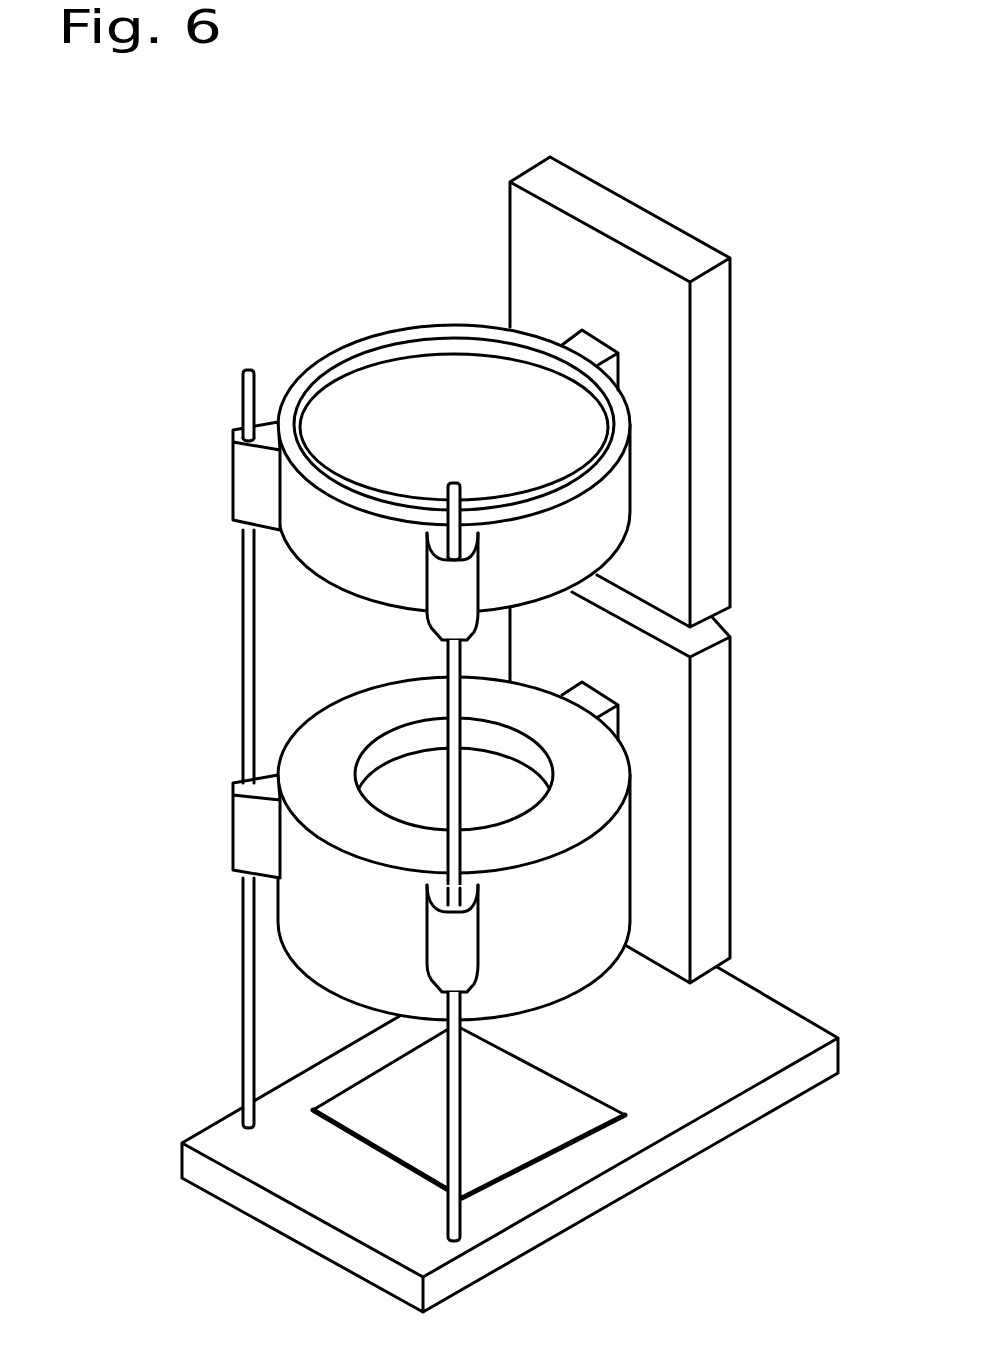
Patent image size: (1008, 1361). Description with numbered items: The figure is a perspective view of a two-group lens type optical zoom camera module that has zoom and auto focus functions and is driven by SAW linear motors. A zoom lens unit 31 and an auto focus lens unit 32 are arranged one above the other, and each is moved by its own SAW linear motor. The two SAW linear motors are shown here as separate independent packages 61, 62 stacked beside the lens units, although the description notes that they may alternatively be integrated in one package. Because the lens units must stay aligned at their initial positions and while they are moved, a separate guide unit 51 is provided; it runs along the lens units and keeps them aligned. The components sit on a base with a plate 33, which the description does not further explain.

The zoom lens unit 31 is at (402, 333).
The auto focus lens unit 32 is at (300, 730).
The plate 33 is at (388, 1123).
The guide unit 51 is at (247, 393).
The independent package 61 is at (710, 545).
The independent package 62 is at (713, 888).